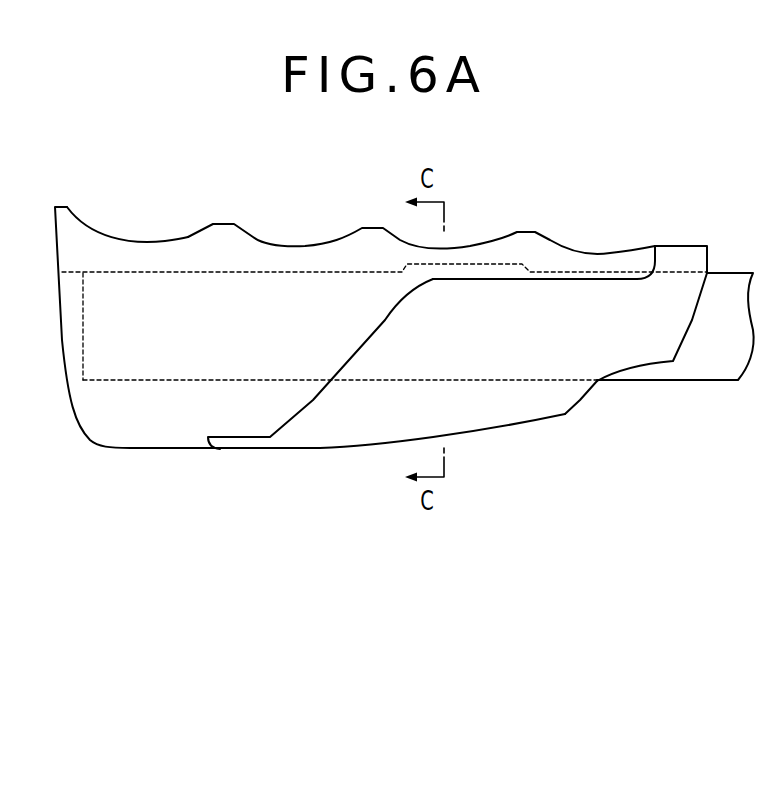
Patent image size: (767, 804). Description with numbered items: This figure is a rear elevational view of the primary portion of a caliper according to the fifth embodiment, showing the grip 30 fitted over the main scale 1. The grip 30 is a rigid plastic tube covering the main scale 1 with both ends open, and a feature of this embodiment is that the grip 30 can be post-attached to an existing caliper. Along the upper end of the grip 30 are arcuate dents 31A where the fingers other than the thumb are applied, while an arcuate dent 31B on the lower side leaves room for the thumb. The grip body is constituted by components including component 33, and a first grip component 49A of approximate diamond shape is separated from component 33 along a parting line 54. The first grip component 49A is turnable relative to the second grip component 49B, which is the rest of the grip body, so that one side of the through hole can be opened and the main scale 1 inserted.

The main scale 1 is at (724, 283).
The grip 30 is at (128, 593).
The arcuate dents 31A is at (275, 242).
The arcuate dent 31B is at (628, 453).
The component 33 is at (320, 435).
The first grip component 49A is at (520, 462).
The second grip component 49B is at (138, 255).
The parting line 54 is at (345, 497).